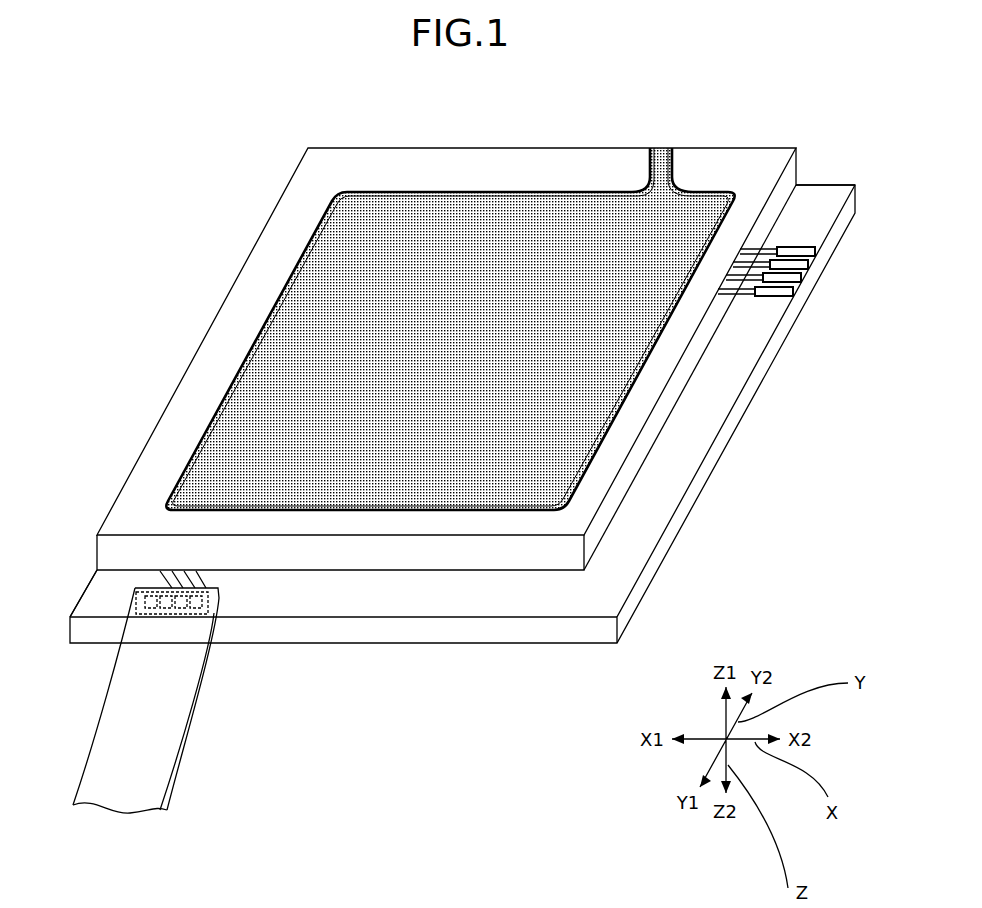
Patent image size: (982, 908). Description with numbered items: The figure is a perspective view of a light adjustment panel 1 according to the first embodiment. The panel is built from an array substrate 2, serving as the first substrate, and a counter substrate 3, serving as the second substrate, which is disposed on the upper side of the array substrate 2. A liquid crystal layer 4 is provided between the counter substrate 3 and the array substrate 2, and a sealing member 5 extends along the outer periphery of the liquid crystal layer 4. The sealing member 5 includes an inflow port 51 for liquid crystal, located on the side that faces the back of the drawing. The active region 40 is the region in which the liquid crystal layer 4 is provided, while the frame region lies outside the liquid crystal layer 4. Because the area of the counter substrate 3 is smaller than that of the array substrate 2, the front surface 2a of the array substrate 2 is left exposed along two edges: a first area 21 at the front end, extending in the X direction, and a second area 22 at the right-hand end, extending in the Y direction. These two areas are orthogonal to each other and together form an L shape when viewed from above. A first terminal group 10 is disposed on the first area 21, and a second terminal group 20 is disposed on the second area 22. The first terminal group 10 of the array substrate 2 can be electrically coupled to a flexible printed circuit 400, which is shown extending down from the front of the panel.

The light adjustment panel 1 is at (277, 748).
The array substrate 2 is at (428, 585).
The front surface of the array substrate 2a is at (596, 611).
The counter substrate 3 is at (390, 516).
The liquid crystal layer 4 is at (349, 480).
The sealing member 5 is at (230, 385).
The first terminal group 10 is at (177, 612).
The second terminal group 20 is at (797, 270).
The first area 21 is at (105, 588).
The second area 22 is at (833, 193).
The active region 40 is at (318, 293).
The inflow port 51 is at (660, 150).
The flexible printed circuit 400 is at (120, 663).